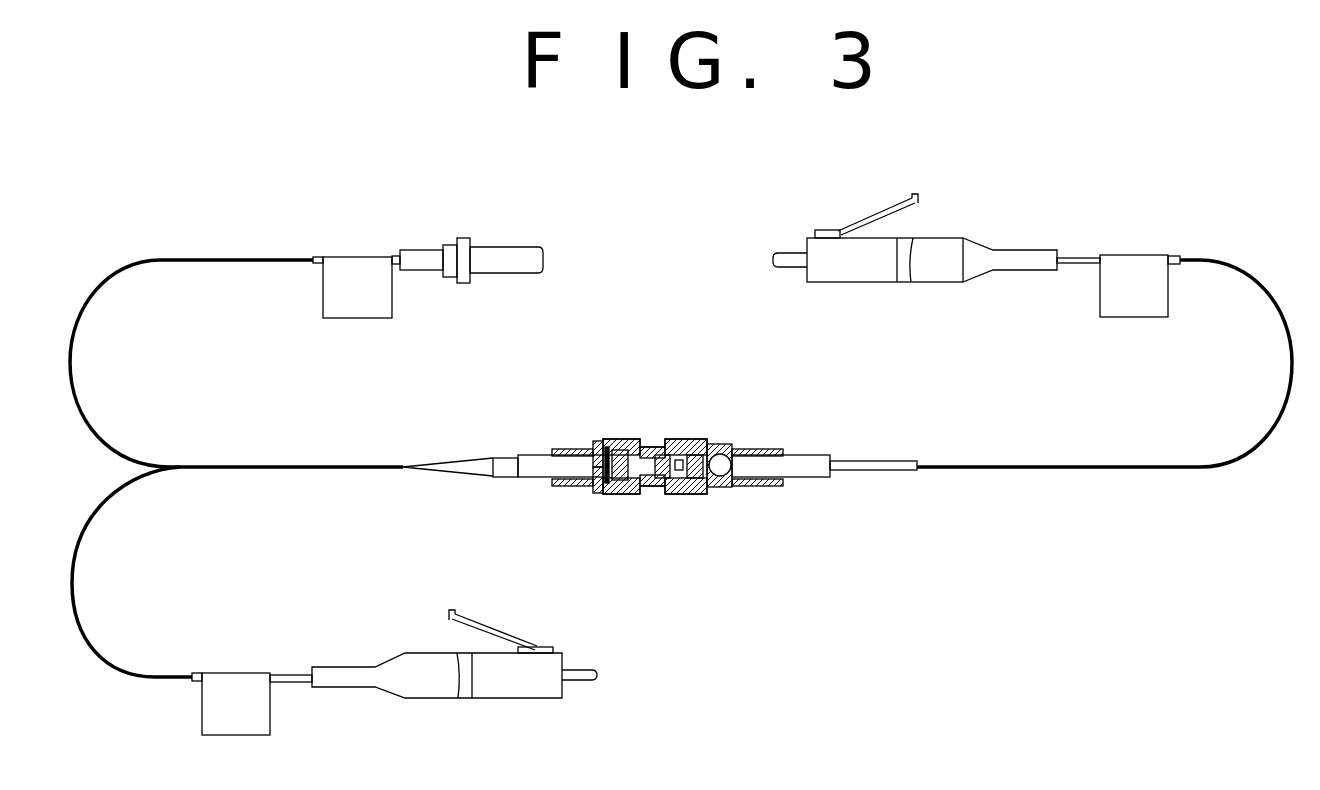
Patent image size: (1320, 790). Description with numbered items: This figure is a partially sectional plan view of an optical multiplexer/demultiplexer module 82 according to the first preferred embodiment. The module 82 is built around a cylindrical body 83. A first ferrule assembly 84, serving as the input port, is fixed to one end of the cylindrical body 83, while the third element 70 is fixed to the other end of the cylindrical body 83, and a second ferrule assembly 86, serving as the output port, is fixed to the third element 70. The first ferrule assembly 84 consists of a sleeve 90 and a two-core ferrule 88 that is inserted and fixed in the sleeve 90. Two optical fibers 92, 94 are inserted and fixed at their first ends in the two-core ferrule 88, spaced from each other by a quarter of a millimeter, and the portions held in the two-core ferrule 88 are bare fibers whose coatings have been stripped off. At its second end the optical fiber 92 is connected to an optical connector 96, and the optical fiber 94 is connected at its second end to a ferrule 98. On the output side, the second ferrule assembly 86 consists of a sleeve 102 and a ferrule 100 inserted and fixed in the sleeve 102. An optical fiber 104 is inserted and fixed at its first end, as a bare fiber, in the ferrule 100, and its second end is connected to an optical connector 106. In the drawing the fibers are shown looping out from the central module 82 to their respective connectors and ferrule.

The third element 70 is at (715, 447).
The optical multiplexer/demultiplexer module 82 is at (657, 430).
The cylindrical body 83 is at (621, 428).
The first ferrule assembly 84 is at (580, 440).
The second ferrule assembly 86 is at (765, 440).
The two-core ferrule 88 is at (535, 457).
The sleeve 90 is at (562, 486).
The optical fiber 92 is at (150, 682).
The optical fiber 94 is at (250, 257).
The optical connector 96 is at (500, 693).
The ferrule 98 is at (505, 253).
The ferrule 100 is at (813, 473).
The sleeve 102 is at (752, 484).
The optical fiber 104 is at (1033, 470).
The optical connector 106 is at (955, 243).